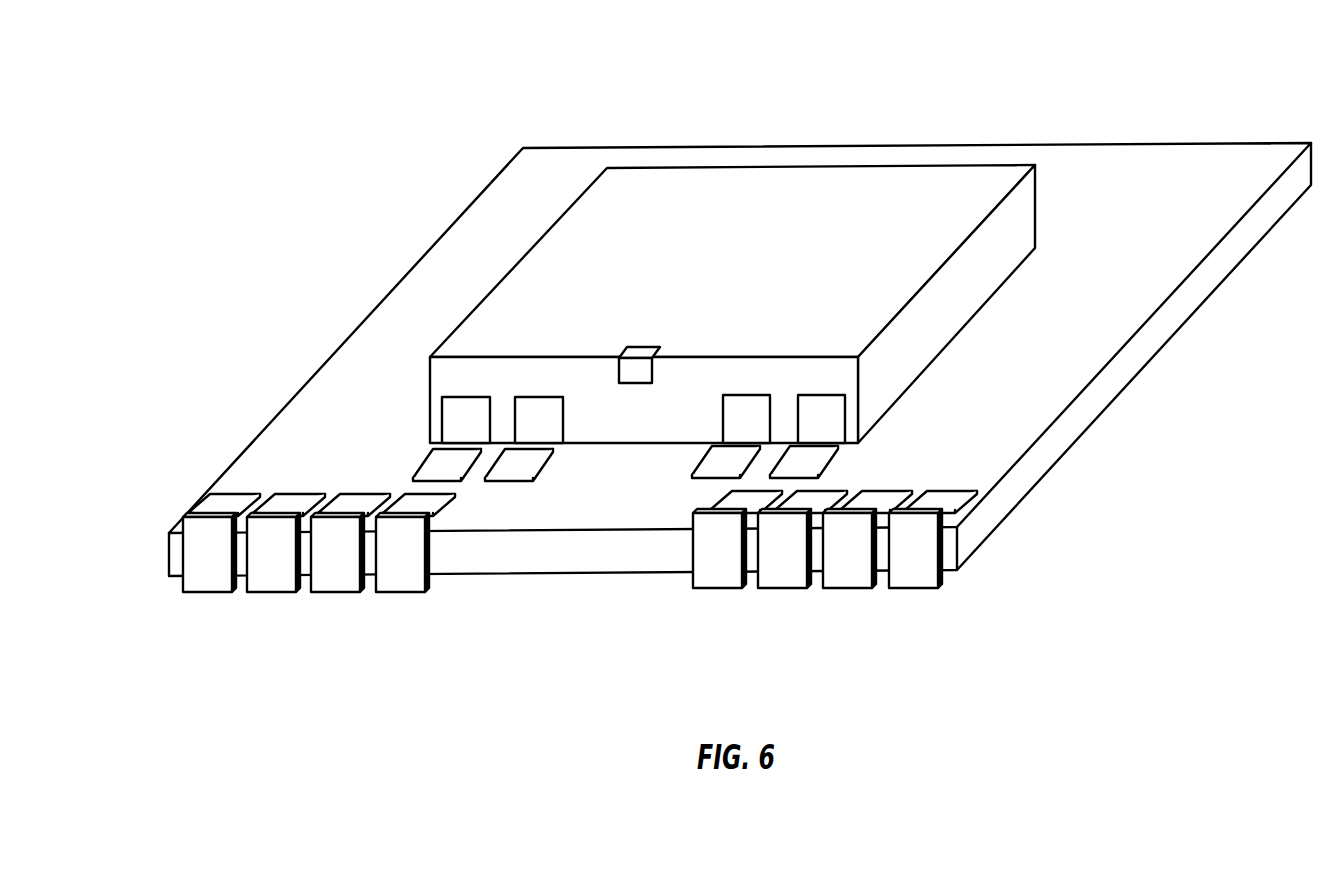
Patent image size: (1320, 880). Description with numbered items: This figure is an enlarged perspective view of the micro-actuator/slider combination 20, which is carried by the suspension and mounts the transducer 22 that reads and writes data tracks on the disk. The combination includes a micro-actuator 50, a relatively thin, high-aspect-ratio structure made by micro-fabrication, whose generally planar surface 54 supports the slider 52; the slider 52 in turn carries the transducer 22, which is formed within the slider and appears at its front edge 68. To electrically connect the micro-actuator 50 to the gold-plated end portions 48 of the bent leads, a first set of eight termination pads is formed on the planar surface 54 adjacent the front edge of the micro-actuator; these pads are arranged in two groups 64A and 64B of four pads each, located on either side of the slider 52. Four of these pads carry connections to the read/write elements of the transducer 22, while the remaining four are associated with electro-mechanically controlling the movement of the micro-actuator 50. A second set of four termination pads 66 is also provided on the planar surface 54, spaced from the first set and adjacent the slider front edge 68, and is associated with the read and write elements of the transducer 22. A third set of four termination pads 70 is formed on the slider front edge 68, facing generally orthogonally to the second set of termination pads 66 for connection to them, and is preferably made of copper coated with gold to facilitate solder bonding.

The micro-actuator/slider combination 20 is at (958, 97).
The transducer 22 is at (643, 348).
The end portions of the bent leads 48 is at (205, 587).
The micro-actuator 50 is at (740, 359).
The slider 52 is at (677, 183).
The generally planar surface 54 is at (1023, 388).
The first group of termination pads 64A is at (363, 502).
The second group of termination pads 64B is at (887, 488).
The second set of termination pads 66 is at (430, 460).
The front edge of the slider 68 is at (442, 378).
The third set of termination pads 70 is at (547, 402).